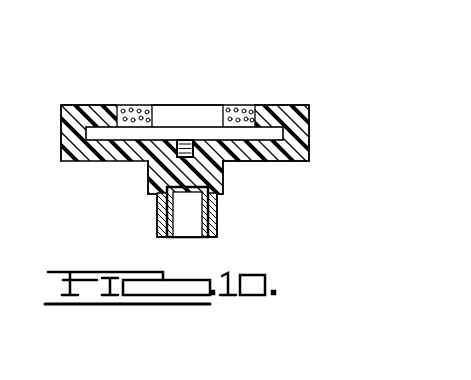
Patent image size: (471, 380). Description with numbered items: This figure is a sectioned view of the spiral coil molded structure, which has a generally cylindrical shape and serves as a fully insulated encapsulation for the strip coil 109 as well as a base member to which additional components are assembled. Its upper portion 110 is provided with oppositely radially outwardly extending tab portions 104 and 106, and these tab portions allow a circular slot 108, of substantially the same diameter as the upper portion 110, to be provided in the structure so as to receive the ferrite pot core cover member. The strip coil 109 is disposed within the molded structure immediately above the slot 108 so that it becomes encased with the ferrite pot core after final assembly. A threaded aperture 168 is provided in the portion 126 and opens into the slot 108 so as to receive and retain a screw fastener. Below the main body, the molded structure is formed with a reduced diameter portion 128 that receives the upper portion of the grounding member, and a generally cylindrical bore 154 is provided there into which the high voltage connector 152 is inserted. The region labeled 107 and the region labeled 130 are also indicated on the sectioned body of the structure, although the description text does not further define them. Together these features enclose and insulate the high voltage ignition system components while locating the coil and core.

The tab portion 104 is at (293, 105).
The tab portion 106 is at (74, 104).
The top plate section 107 is at (204, 110).
The circular slot 108 is at (278, 131).
The strip coil 109 is at (244, 104).
The upper portion 110 is at (134, 104).
The portion 126 is at (310, 152).
The reduced diameter portion 128 is at (129, 240).
The lower housing surface 130 is at (260, 161).
The high voltage connector 152 is at (208, 213).
The cylindrical bore 154 is at (183, 237).
The threaded aperture 168 is at (184, 140).